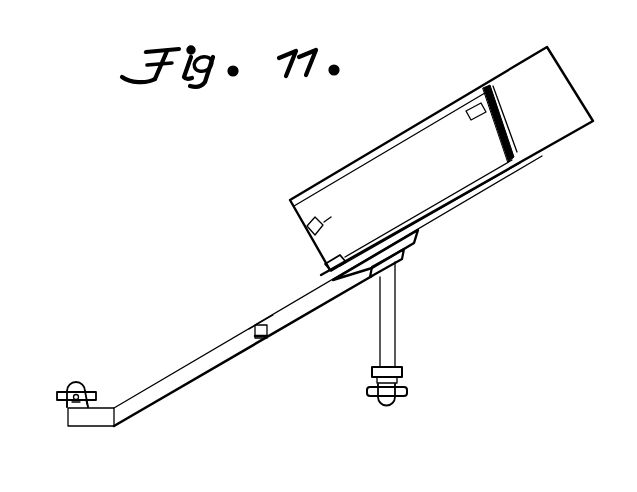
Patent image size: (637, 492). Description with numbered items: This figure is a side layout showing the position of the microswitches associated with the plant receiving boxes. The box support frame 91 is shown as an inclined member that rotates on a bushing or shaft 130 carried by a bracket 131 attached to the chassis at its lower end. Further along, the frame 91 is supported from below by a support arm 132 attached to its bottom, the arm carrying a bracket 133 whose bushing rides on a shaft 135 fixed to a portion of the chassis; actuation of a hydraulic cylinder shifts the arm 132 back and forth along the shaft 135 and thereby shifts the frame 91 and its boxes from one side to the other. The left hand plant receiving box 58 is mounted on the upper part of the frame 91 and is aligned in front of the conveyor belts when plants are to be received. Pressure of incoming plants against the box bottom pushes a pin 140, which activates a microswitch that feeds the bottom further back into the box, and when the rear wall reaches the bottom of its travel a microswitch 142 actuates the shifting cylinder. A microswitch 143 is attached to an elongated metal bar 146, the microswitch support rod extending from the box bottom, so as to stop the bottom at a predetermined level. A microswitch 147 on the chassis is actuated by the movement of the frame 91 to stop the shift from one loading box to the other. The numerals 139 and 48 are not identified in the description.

The plant receiving box 58 is at (537, 50).
The pin 140 is at (480, 103).
The inner wall 139 is at (328, 218).
The microswitch 142 is at (307, 228).
The microswitch 143 is at (320, 270).
The elongated metal bar 146 is at (455, 200).
The support arm 132 is at (392, 297).
The bracket 133 is at (403, 371).
The shaft 135 is at (404, 388).
The box support frame 91 is at (188, 372).
The microswitch 147 is at (263, 340).
The rail portion 48 is at (256, 340).
The bushing 130 is at (97, 393).
The bracket 131 is at (67, 401).